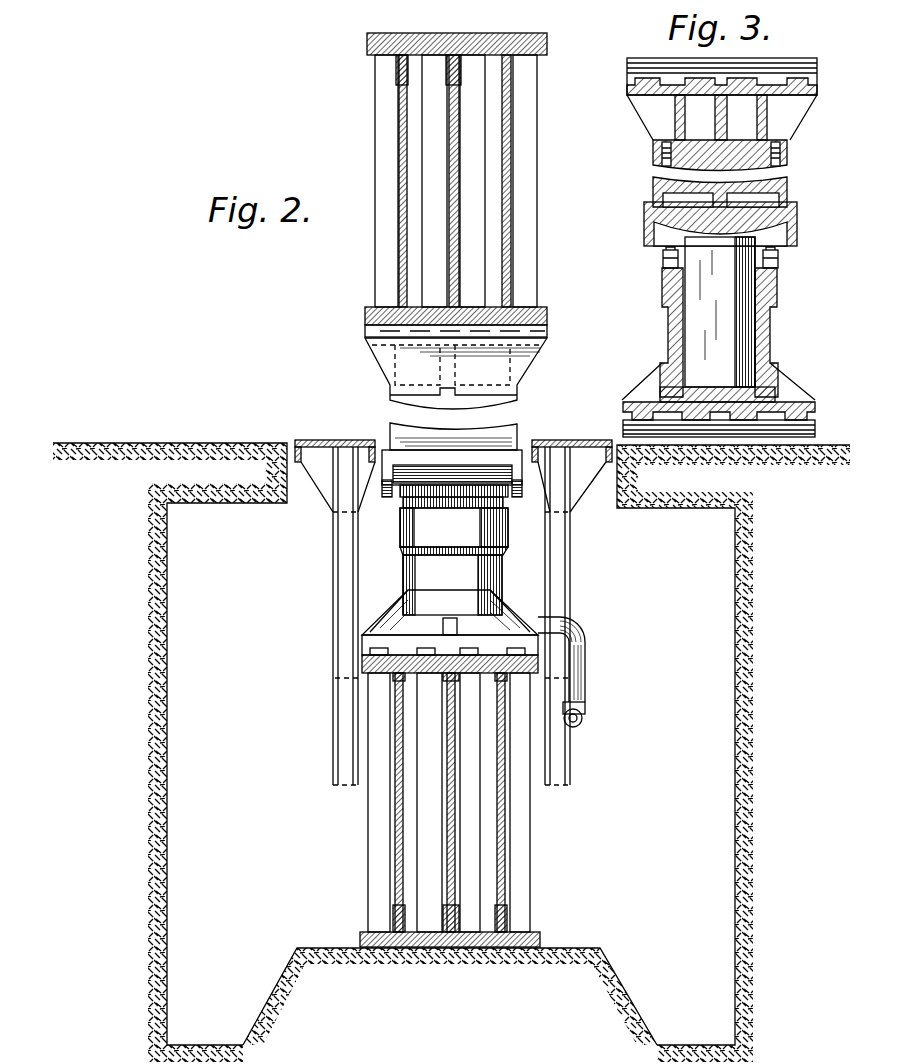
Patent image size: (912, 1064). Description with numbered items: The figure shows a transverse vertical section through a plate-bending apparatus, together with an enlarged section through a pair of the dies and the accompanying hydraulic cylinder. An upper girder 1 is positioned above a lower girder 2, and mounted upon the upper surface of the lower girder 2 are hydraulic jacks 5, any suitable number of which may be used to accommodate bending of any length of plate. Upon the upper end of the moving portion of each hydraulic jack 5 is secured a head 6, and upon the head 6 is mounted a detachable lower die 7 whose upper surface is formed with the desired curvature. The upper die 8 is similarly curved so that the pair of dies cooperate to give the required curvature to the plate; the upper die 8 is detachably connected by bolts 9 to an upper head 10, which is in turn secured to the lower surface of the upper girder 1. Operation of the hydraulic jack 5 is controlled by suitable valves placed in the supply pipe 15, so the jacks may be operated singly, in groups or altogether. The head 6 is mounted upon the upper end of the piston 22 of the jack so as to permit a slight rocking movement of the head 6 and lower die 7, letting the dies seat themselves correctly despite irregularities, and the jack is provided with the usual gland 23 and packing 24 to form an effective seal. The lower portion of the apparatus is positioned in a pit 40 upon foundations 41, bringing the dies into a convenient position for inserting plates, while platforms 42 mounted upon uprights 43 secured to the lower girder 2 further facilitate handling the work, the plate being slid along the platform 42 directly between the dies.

In FIG. 2, the upper girder 1 is at (512, 150).
In FIG. 2, the lower girder 2 is at (503, 836).
In FIG. 2, the hydraulic jack 5 is at (450, 566).
In FIG. 2, the head 6 is at (512, 497).
In FIG. 3, the head 6 is at (797, 215).
In FIG. 2, the lower die 7 is at (515, 432).
In FIG. 3, the lower die 7 is at (787, 183).
In FIG. 2, the upper die 8 is at (505, 396).
In FIG. 3, the upper die 8 is at (655, 152).
In FIG. 3, the bolt 9 is at (662, 166).
In FIG. 3, the upper head 10 is at (815, 80).
In FIG. 2, the supply pipe 15 is at (583, 660).
In FIG. 3, the piston 22 is at (720, 312).
In FIG. 3, the gland 23 is at (778, 262).
In FIG. 3, the packing 24 is at (760, 295).
In FIG. 2, the pit 40 is at (451, 752).
In FIG. 2, the foundation 41 is at (612, 975).
In FIG. 2, the platform 42 is at (305, 440).
In FIG. 2, the upright 43 is at (343, 583).